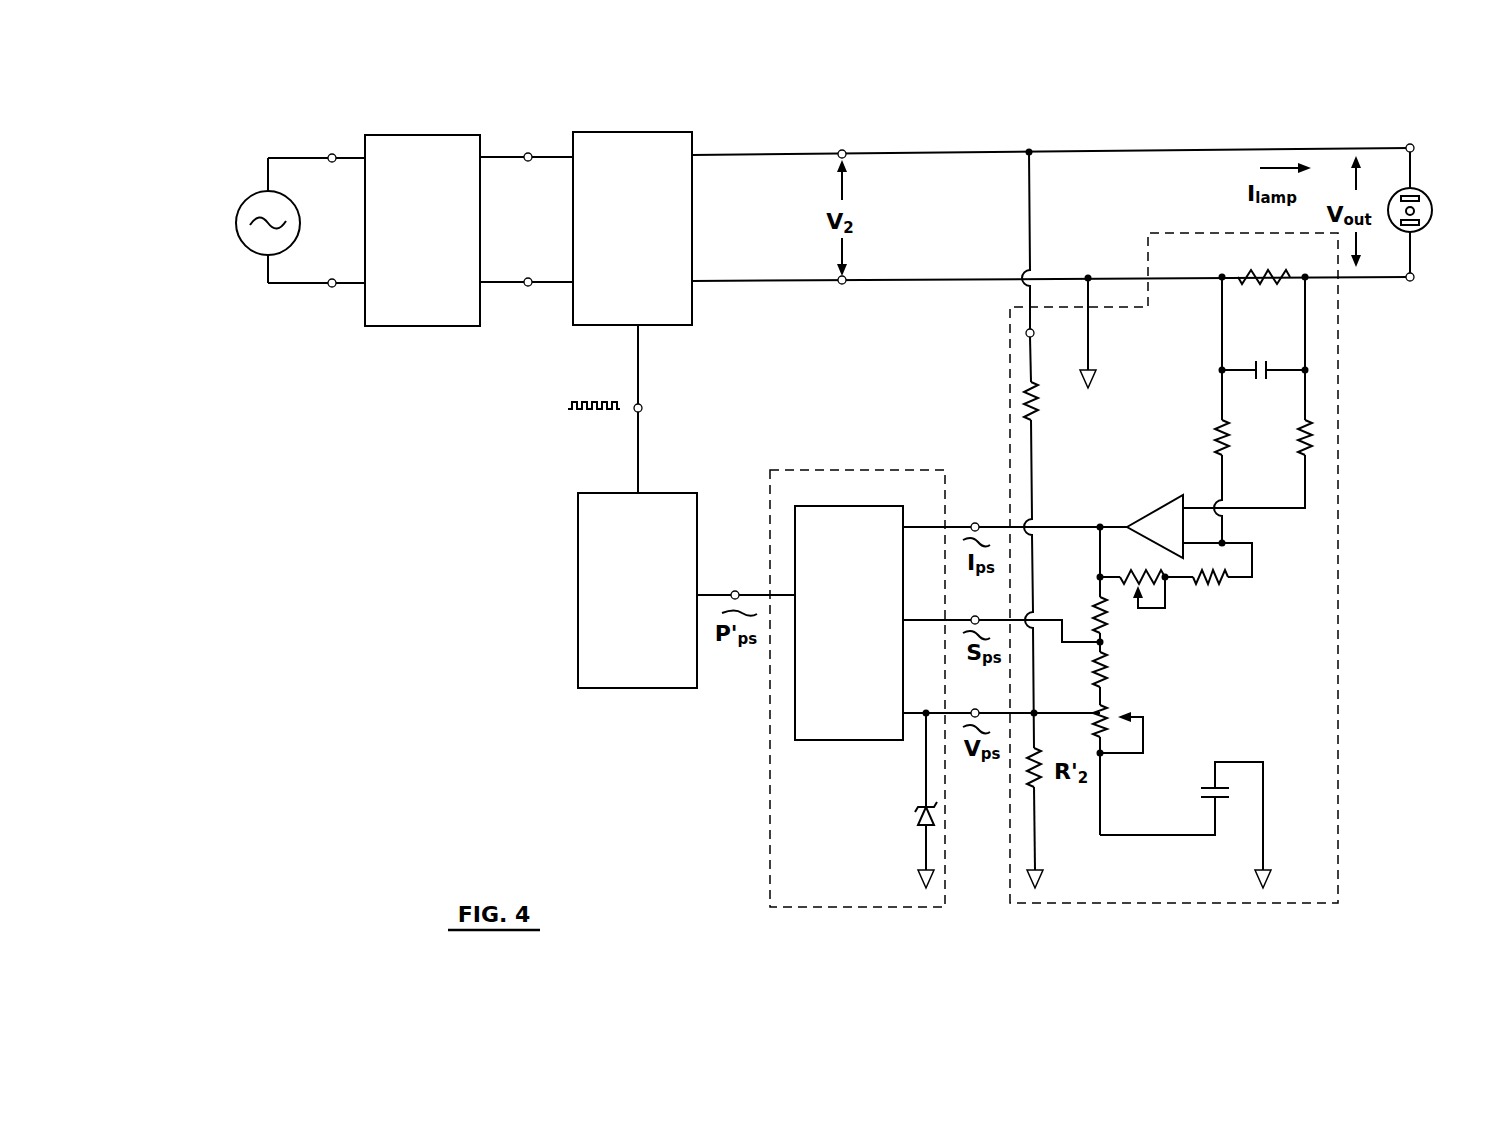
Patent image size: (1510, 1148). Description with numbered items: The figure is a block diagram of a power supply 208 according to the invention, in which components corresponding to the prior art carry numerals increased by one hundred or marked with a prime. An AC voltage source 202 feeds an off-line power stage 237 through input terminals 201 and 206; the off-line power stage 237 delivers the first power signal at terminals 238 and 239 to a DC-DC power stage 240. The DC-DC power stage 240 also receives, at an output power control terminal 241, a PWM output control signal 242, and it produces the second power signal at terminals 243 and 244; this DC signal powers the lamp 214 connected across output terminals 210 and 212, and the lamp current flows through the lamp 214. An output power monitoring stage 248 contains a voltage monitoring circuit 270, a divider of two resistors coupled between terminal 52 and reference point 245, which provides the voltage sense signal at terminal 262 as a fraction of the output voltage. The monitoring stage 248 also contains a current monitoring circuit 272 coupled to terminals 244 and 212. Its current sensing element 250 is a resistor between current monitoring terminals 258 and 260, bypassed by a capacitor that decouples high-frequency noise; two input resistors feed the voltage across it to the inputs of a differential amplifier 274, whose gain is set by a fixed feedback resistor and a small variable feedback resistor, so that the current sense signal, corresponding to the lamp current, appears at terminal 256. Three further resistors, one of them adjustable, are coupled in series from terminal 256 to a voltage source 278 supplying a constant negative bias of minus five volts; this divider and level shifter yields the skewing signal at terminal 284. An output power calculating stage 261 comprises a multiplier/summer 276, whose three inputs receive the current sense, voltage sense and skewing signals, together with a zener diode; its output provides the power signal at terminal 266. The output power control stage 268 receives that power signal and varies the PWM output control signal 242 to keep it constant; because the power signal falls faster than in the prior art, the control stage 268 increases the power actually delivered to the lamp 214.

The terminal 52 is at (1049, 335).
The input terminal 201 is at (316, 146).
The AC voltage source 202 is at (252, 240).
The input terminal 206 is at (316, 301).
The power supply 208 is at (443, 726).
The output terminal 210 is at (1408, 134).
The output terminal 212 is at (1412, 292).
The lamp 214 is at (1428, 226).
The off-line power stage 237 is at (418, 327).
The terminal 238 is at (526, 141).
The terminal 239 is at (526, 300).
The DC-DC power stage 240 is at (637, 132).
The output power control terminal 241 is at (664, 409).
The PWM output control signal 242 is at (592, 412).
The terminal 243 is at (842, 140).
The terminal 244 is at (842, 298).
The reference point 245 is at (1110, 332).
The output power monitoring stage 248 is at (1172, 905).
The current sensing element 250 is at (1254, 316).
The terminal 256 is at (1001, 514).
The current monitoring terminal 258 is at (1216, 264).
The current monitoring terminal 260 is at (1302, 264).
The output power calculating stage 261 is at (857, 714).
The terminal 262 is at (1001, 699).
The terminal 266 is at (746, 581).
The output power control stage 268 is at (632, 690).
The voltage monitoring circuit 270 is at (1002, 450).
The current monitoring circuit 272 is at (1236, 654).
The differential amplifier 274 is at (1157, 506).
The multiplier/summer 276 is at (815, 742).
The voltage source 278 is at (1198, 793).
The terminal 284 is at (1001, 616).